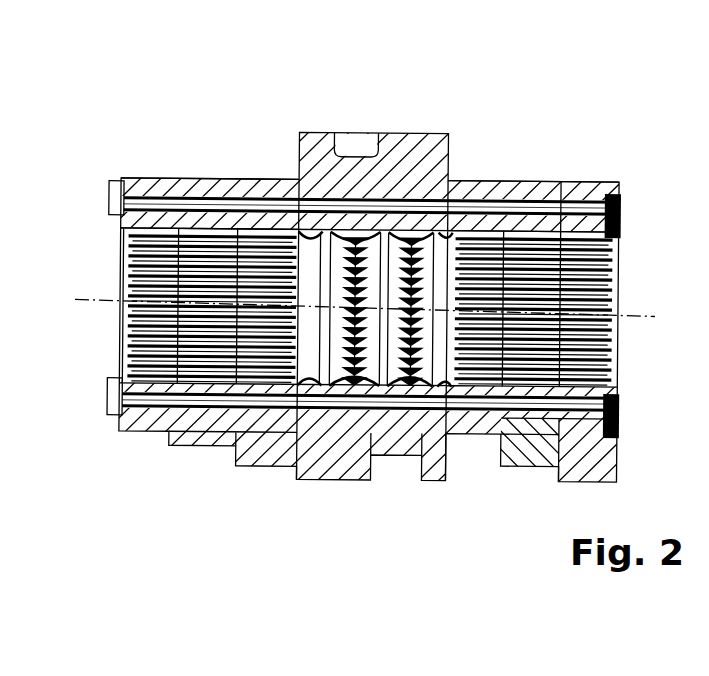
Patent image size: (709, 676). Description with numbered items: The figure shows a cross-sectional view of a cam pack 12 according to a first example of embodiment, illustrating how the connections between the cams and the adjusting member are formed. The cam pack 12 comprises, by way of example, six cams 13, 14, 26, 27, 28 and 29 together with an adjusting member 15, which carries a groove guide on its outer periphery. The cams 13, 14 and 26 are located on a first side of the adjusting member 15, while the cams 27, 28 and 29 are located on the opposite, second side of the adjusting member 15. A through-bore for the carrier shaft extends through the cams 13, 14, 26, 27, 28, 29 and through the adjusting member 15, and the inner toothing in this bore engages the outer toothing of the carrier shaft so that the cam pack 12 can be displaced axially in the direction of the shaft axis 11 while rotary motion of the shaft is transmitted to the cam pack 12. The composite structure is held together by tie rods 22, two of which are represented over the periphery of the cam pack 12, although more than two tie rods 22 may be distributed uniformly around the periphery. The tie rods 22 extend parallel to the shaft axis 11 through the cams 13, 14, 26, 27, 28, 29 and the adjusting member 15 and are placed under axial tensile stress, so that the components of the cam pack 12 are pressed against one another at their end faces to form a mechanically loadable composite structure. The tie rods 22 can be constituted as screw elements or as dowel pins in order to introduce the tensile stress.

The shaft axis 11 is at (80, 300).
The cam pack 12 is at (352, 512).
The cam 13 is at (152, 180).
The cam 14 is at (207, 180).
The adjusting member 15 is at (322, 132).
The tie rod 22 is at (590, 180).
The cam 26 is at (260, 180).
The cam 27 is at (470, 180).
The cam 28 is at (528, 180).
The cam 29 is at (572, 180).